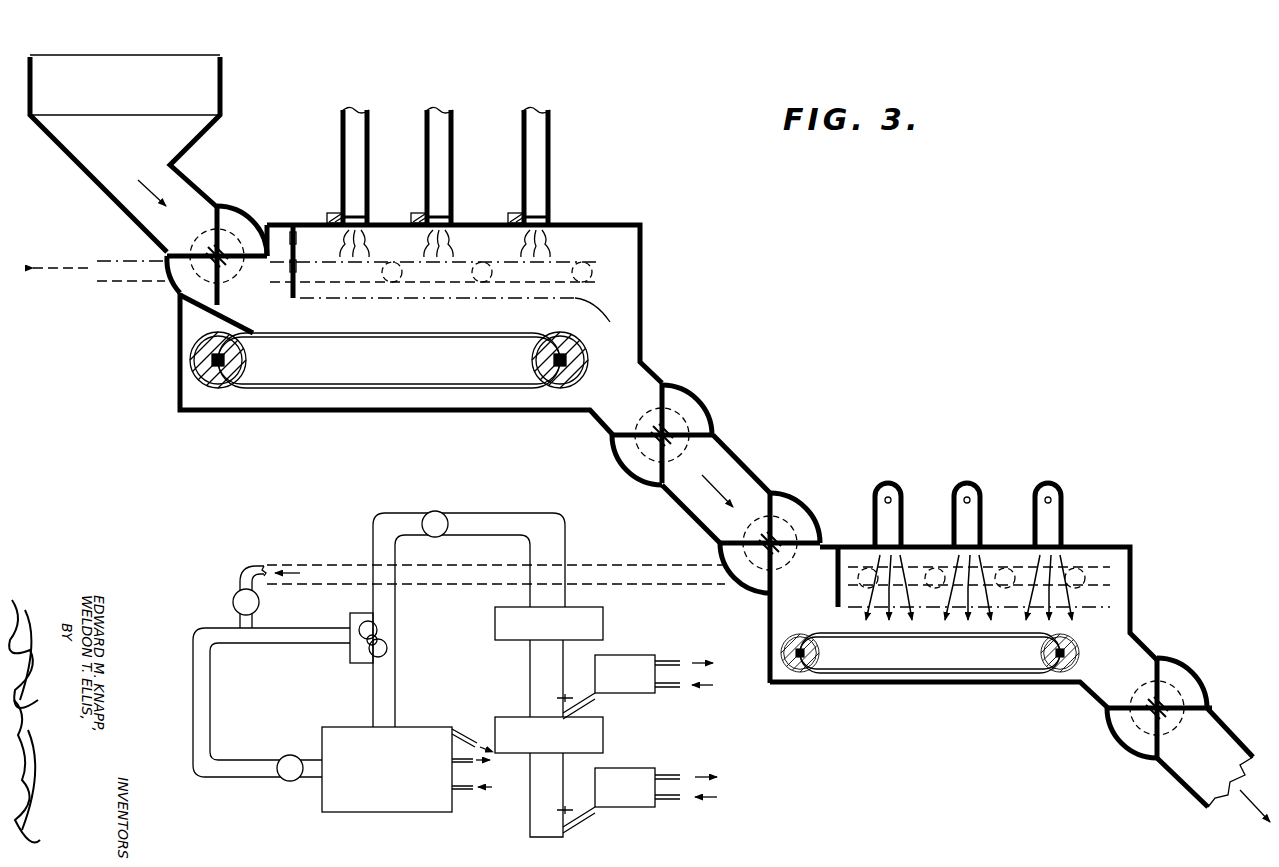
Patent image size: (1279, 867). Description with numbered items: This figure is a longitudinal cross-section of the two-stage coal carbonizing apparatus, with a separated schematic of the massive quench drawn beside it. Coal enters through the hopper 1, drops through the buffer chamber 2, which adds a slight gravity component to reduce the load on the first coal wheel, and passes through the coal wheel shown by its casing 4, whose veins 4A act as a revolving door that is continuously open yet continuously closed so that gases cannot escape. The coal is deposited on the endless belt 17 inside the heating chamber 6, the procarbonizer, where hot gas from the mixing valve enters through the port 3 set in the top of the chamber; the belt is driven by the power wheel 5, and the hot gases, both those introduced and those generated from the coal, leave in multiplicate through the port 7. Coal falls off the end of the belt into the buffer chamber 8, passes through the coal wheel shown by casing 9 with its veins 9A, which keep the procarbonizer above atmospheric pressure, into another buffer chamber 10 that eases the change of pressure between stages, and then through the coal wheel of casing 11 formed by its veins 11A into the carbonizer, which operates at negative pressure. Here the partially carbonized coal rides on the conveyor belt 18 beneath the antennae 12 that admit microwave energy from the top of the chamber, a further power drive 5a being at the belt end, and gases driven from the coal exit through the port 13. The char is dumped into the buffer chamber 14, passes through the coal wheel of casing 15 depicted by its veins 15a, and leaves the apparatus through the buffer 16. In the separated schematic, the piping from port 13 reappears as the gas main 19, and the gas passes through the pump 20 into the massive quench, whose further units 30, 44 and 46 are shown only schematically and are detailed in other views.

The hopper 1 is at (200, 90).
The buffer chamber 2 is at (183, 197).
The port 3 is at (540, 113).
The coal wheel casing 4 is at (193, 272).
The coal wheel veins 4A is at (220, 213).
The power wheel 5 is at (202, 370).
The power drive 5a is at (1077, 673).
The heating chamber 6 is at (597, 297).
The port 7 is at (592, 271).
The buffer chamber 8 is at (645, 367).
The coal wheel casing 9 is at (677, 413).
The coal wheel veins 9A is at (700, 428).
The buffer chamber 10 is at (723, 477).
The coal wheel casing 11 is at (790, 513).
The coal wheel veins 11A is at (805, 538).
The antennae 12 is at (1048, 494).
The port 13 is at (1090, 578).
The buffer chamber 14 is at (1148, 643).
The coal wheel casing 15 is at (1195, 672).
The coal wheel veins 15a is at (1183, 703).
The buffer chamber 16 is at (1222, 725).
The endless belt 17 is at (397, 340).
The conveyor belt 18 is at (893, 640).
The gas main 19 is at (481, 558).
The pump 20 is at (379, 646).
The treatment unit 30 is at (360, 795).
The heat exchanger 44 is at (512, 727).
The condenser 46 is at (630, 775).